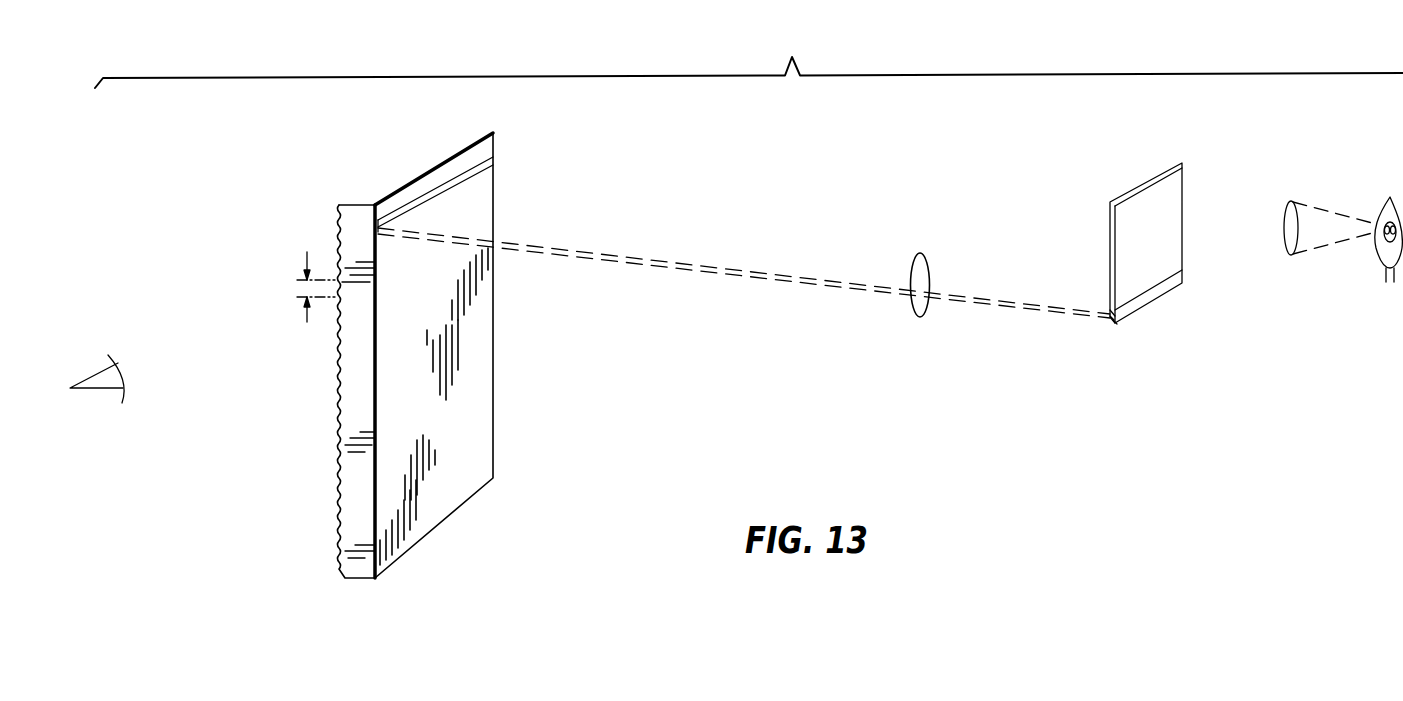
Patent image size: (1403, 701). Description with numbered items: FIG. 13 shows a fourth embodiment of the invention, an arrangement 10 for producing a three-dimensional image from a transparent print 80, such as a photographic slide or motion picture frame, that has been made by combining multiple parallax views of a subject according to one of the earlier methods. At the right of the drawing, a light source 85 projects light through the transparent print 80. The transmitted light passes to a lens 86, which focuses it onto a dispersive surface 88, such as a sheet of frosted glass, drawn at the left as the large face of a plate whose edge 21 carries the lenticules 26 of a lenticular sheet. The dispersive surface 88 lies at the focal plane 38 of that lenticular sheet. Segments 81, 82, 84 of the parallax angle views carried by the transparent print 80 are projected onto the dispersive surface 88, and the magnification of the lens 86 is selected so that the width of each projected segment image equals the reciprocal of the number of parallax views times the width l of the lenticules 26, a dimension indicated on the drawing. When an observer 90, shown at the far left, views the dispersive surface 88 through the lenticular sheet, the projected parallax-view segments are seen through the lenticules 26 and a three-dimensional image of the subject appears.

The optical system 10 is at (749, 47).
The edge face of plate 21 is at (363, 567).
The lenticules 26 is at (338, 228).
The focal plane 38 is at (375, 192).
The transparent print 80 is at (1143, 190).
The segment of parallax angle view 81 is at (1110, 312).
The segment of parallax angle view 82 is at (1112, 320).
The segment of parallax angle view 84 is at (1115, 323).
The light source 85 is at (1383, 255).
The lens 86 is at (917, 318).
The dispersive surface 88 is at (436, 508).
The observer 90 is at (91, 402).